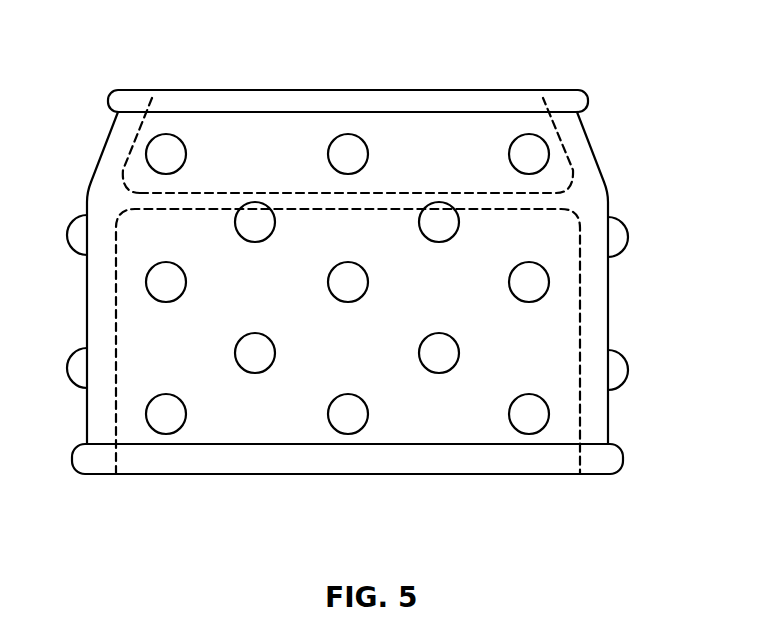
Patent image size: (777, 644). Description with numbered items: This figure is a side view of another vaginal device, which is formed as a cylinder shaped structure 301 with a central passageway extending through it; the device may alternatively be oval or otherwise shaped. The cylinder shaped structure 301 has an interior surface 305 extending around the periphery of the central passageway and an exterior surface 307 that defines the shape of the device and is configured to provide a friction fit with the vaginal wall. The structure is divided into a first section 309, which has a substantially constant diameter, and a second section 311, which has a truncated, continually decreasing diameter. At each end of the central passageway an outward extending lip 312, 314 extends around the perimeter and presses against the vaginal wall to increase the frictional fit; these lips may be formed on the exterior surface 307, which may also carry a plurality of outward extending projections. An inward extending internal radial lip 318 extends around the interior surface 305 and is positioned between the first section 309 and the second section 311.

The cylinder shaped structure 301 is at (630, 368).
The interior surface 305 is at (113, 305).
The exterior surface 307 is at (610, 417).
The first section 309 is at (288, 400).
The second section 311 is at (485, 135).
The outward extending lip 312 is at (558, 92).
The outward extending lip 314 is at (517, 467).
The inward extending internal radial lip 318 is at (207, 198).